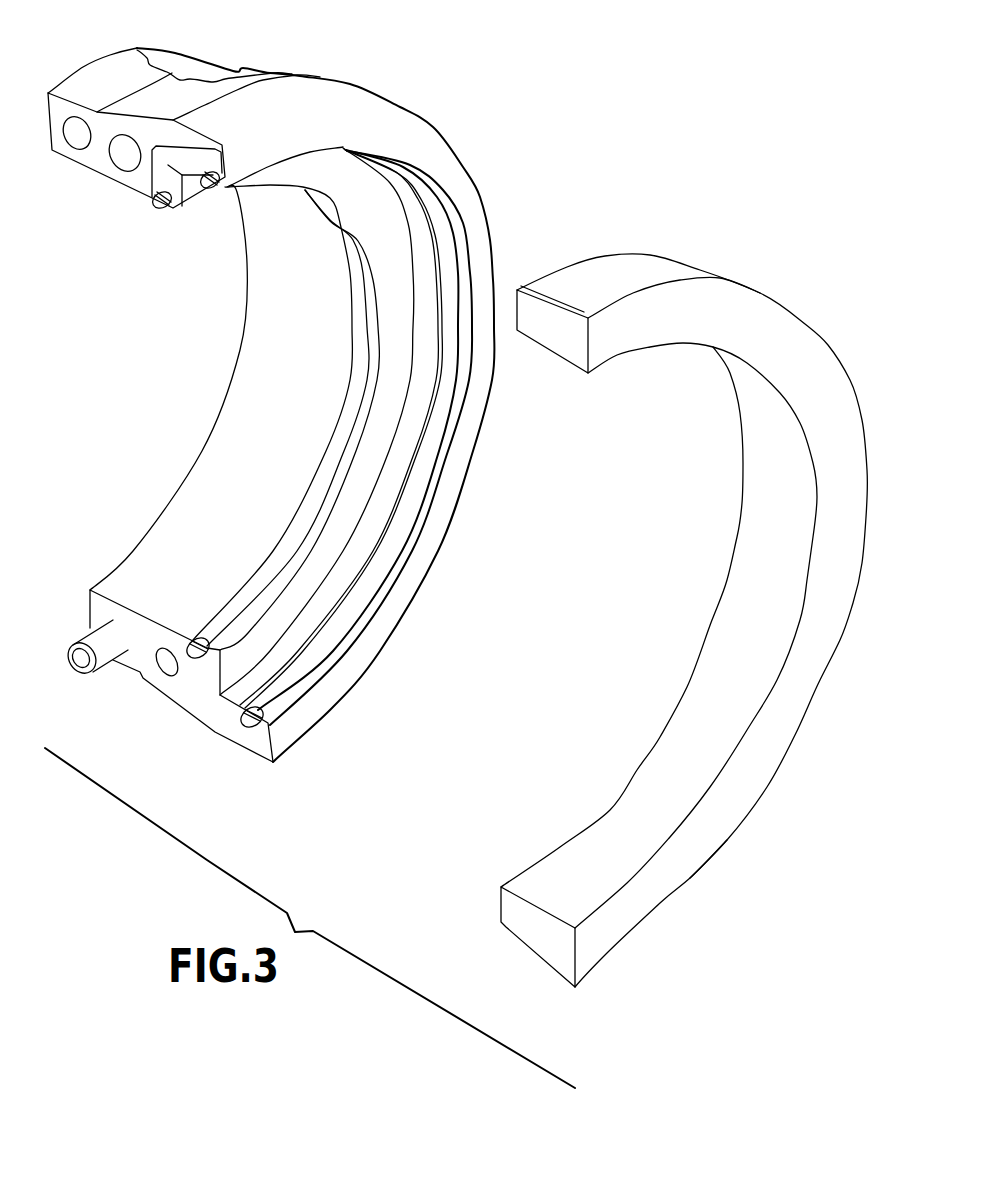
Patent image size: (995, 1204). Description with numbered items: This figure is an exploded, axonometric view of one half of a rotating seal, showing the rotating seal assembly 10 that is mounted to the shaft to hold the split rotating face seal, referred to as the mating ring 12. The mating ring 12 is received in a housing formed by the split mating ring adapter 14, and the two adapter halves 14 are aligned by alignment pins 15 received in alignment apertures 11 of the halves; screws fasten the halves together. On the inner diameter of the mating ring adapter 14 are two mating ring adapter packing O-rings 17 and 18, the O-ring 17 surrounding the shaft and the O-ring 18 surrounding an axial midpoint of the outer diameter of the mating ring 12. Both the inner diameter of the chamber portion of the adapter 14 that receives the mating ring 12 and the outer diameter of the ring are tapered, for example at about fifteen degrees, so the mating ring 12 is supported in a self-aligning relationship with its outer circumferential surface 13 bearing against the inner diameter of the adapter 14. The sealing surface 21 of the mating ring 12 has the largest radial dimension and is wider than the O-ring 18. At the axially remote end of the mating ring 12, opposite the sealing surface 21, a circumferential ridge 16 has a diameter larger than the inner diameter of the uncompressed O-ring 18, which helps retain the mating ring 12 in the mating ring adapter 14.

The rotating seal assembly 10 is at (547, 103).
The alignment aperture 11 is at (162, 676).
The mating ring 12 is at (684, 598).
The outer circumferential surface 13 is at (640, 260).
The split mating ring adapter 14 is at (97, 155).
The alignment pin 15 is at (103, 657).
The circumferential ridge 16 is at (564, 268).
The mating ring adapter packing O-ring 17 is at (157, 212).
The mating ring adapter packing O-ring 18 is at (207, 195).
The sealing surface 21 is at (649, 922).